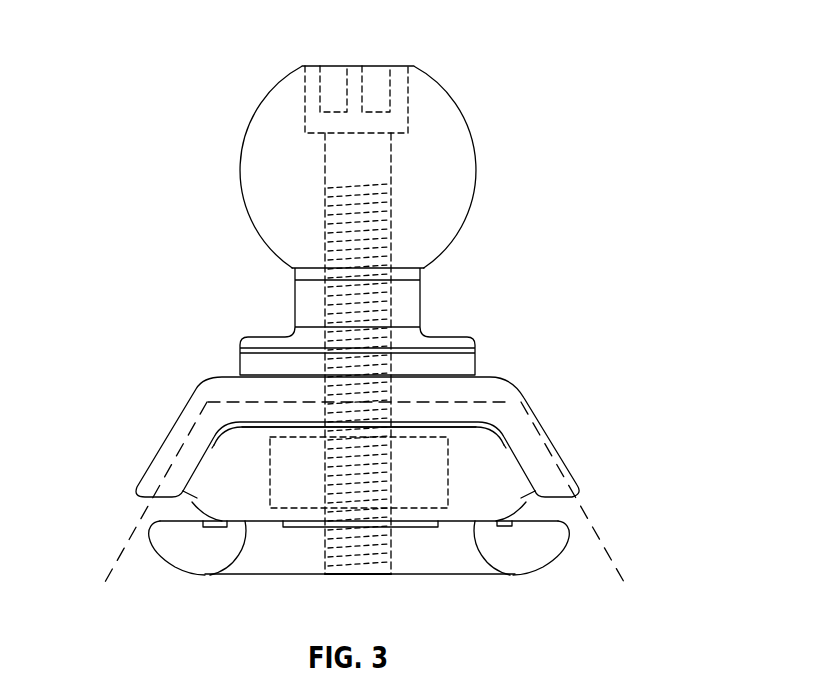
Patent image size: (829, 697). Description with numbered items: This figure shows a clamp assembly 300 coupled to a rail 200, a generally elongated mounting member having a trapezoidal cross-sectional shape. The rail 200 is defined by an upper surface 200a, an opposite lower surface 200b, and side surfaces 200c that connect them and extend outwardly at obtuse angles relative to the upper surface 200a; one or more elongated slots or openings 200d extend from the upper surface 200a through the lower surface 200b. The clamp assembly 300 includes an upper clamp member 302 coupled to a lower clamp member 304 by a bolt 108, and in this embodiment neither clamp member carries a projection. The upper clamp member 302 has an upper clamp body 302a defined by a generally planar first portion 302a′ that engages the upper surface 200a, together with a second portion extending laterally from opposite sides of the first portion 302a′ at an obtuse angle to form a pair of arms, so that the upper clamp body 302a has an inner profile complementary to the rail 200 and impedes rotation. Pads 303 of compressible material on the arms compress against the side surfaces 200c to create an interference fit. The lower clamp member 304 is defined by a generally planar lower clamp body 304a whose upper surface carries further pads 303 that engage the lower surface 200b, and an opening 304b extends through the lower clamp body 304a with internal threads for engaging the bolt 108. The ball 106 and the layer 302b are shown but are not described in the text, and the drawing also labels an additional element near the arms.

The clamp assembly 300 is at (272, 54).
The ball 106 is at (560, 206).
The bolt 108 is at (384, 149).
The upper clamp member 302 is at (139, 365).
The upper clamp body 302a is at (402, 393).
The first portion 302a′ is at (520, 381).
The cover inner layer 302b is at (502, 387).
The rail 200 is at (558, 508).
The upper surface 200a is at (258, 423).
The lower surface 200b is at (305, 524).
The side surfaces 200c is at (187, 497).
The elongated slots or openings 200d is at (438, 461).
The pads 303 is at (201, 449).
The lower clamp member 304 is at (467, 633).
The lower clamp body 304a is at (448, 567).
The opening 304b is at (396, 549).